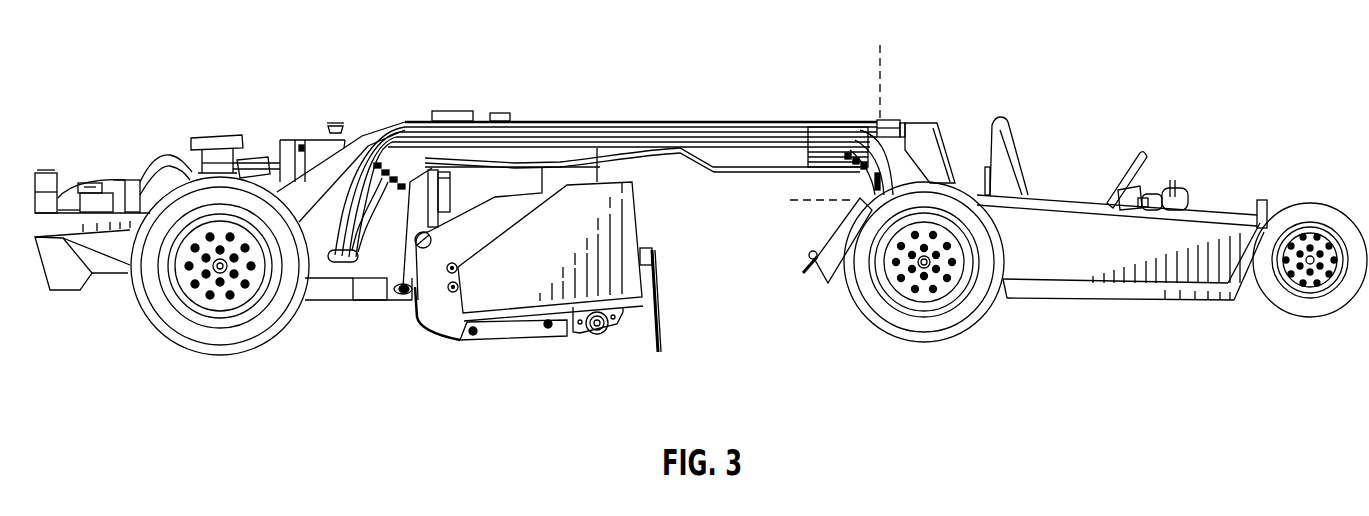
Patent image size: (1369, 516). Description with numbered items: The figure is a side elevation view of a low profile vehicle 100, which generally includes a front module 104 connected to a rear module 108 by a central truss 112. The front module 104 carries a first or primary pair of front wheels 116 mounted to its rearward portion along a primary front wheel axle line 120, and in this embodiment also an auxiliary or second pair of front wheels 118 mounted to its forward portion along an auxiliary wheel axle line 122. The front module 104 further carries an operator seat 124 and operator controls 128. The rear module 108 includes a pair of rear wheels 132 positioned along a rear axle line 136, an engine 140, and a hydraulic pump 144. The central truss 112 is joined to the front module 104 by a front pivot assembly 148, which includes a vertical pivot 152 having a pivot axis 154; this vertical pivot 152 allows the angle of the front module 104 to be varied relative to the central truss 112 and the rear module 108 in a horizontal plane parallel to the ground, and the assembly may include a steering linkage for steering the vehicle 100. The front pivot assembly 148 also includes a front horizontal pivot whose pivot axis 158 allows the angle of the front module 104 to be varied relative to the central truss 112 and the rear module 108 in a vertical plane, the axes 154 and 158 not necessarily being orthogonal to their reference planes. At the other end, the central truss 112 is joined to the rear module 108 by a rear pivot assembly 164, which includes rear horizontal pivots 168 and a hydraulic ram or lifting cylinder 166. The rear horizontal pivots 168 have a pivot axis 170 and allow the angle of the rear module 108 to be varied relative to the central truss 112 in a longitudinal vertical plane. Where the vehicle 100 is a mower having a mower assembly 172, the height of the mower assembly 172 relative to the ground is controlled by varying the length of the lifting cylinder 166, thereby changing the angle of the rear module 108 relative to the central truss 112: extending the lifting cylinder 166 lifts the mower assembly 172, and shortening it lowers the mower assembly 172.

The low profile vehicle 100 is at (1262, 137).
The front module 104 is at (1130, 290).
The rear module 108 is at (378, 123).
The central truss 112 is at (687, 120).
The primary pair of front wheels 116 is at (943, 332).
The auxiliary pair of front wheels 118 is at (1313, 213).
The primary front wheel axle line 120 is at (917, 288).
The auxiliary wheel axle line 122 is at (1293, 290).
The operator seat 124 is at (995, 118).
The operator controls 128 is at (1144, 152).
The pair of rear wheels 132 is at (187, 333).
The rear axle line 136 is at (229, 286).
The engine 140 is at (203, 138).
The hydraulic pump 144 is at (102, 192).
The front pivot assembly 148 is at (886, 113).
The vertical pivot 152 is at (879, 120).
The pivot axis 154 is at (883, 70).
The pivot axis 158 is at (803, 202).
The rear pivot assembly 164 is at (367, 316).
The lifting cylinder 166 is at (447, 108).
The rear horizontal pivots 168 is at (405, 297).
The pivot axis 170 is at (413, 317).
The mower assembly 172 is at (527, 297).